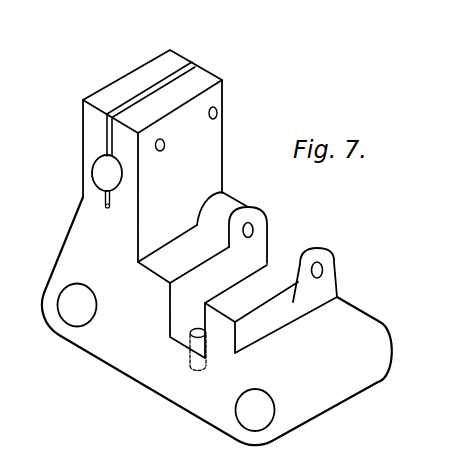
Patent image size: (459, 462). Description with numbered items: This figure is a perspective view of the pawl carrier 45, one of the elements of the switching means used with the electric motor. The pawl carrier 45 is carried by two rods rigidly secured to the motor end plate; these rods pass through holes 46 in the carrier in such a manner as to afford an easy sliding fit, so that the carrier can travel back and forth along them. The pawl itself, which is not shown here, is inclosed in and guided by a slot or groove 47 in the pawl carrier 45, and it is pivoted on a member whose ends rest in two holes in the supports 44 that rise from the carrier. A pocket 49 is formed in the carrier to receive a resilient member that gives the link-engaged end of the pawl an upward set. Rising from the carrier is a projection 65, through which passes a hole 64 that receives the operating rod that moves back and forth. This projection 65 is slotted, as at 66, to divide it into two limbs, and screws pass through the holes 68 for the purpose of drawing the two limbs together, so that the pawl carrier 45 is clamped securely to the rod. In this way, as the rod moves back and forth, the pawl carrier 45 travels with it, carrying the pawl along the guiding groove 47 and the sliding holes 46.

The supports 44 is at (266, 251).
The pawl carrier 45 is at (311, 270).
The holes 46 is at (245, 422).
The slot or groove 47 is at (182, 300).
The pocket 49 is at (194, 343).
The hole 64 is at (100, 181).
The projection 65 is at (87, 143).
The slot 66 is at (184, 71).
The holes 68 is at (163, 146).